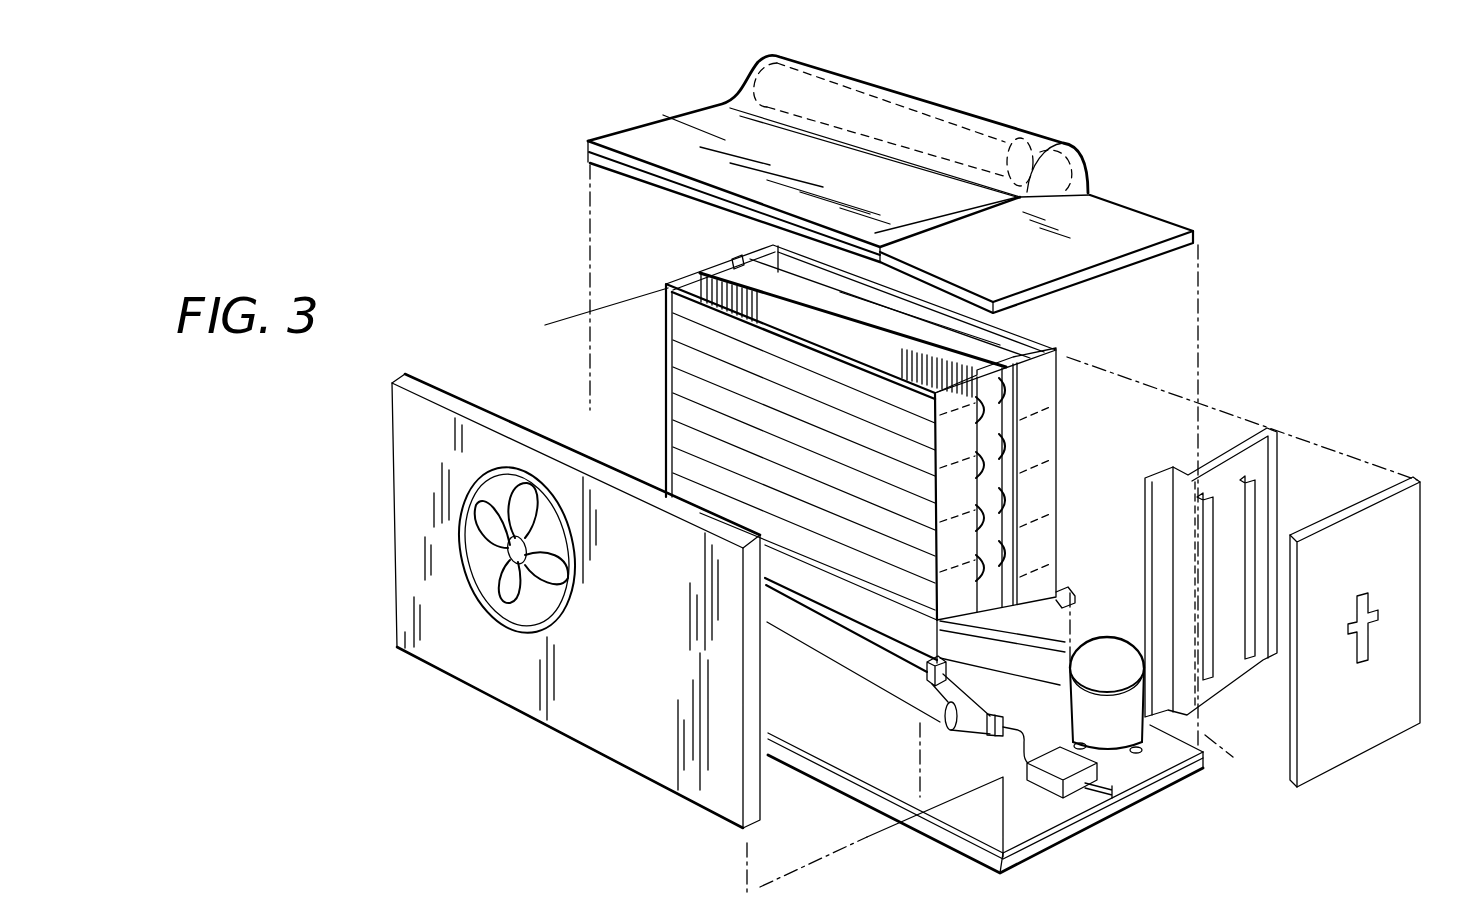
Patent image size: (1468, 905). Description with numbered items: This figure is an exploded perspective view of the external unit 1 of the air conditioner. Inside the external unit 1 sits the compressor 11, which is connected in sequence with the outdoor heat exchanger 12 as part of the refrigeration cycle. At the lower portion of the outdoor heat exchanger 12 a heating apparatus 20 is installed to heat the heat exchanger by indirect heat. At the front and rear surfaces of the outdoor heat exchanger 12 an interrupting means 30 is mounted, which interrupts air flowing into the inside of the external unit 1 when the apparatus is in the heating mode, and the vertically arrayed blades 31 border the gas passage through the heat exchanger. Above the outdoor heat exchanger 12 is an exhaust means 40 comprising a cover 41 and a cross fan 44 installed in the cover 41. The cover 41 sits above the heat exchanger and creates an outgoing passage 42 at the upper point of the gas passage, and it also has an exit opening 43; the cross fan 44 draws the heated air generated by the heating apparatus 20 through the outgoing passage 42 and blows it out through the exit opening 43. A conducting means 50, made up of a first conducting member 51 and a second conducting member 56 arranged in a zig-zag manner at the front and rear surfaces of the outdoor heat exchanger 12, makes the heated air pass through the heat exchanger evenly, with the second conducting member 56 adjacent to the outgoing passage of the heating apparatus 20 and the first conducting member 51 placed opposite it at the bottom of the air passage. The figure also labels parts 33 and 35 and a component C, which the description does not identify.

The external unit 1 is at (1215, 192).
The compressor 11 is at (1112, 737).
The outdoor heat-exchanger 12 is at (1037, 452).
The heating apparatus 20 is at (910, 747).
The interrupting means 30 is at (808, 416).
The vertically arrayed blades 31 is at (683, 333).
The side bracket 33 is at (1280, 448).
The rear panel 35 is at (1355, 745).
The exhaust means 40 is at (835, 166).
The cover 41 is at (650, 123).
The outgoing passage 42 is at (990, 305).
The exit opening 43 is at (607, 163).
The cross fan 44 is at (890, 110).
The conducting means 50 is at (1039, 453).
The first conducting member 51 is at (1033, 470).
The second conducting member 56 is at (1033, 517).
The front panel with fan C is at (578, 724).